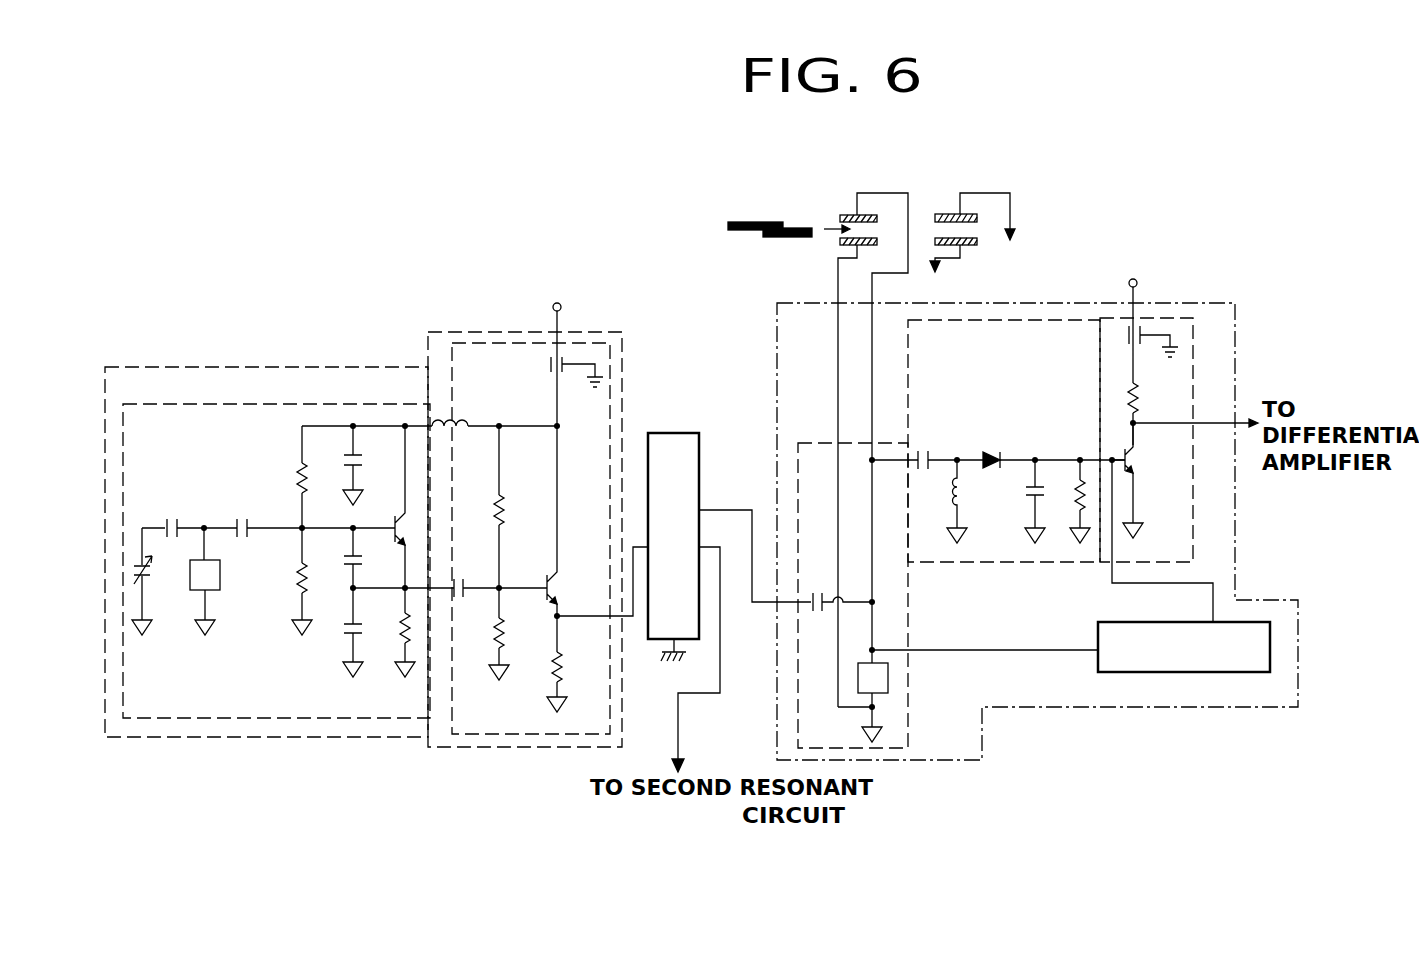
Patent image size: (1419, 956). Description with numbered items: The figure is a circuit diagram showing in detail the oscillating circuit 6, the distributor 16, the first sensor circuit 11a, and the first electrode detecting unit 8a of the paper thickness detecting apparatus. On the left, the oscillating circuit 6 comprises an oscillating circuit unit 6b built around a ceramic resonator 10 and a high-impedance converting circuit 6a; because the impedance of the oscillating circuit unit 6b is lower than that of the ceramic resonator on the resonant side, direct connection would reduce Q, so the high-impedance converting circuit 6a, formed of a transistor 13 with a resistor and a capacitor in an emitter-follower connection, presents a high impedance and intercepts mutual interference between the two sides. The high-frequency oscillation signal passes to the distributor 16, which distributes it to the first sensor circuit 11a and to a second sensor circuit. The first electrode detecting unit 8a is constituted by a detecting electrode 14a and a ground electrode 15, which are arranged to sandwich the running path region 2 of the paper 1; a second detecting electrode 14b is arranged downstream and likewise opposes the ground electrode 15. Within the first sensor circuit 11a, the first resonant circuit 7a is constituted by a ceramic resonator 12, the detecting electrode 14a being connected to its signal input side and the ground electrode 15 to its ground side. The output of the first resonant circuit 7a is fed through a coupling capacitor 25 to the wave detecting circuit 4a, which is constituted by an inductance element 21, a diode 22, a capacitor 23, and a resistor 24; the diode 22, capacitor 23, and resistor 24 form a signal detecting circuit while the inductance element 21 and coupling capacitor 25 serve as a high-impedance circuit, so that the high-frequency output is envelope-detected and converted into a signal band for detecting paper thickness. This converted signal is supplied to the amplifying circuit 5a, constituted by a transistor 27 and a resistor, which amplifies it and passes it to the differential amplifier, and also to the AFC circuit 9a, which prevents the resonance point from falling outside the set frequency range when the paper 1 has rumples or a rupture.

The paper 1 is at (751, 222).
The running path region 2 is at (877, 221).
The wave detecting circuit 4a is at (977, 320).
The amplifying circuit 5a is at (1175, 318).
The oscillating circuit 6 is at (168, 368).
The high-impedance converting circuit 6a is at (522, 343).
The oscillating circuit unit 6b is at (243, 405).
The first resonant circuit 7a is at (905, 749).
The first electrode detecting unit 8a is at (827, 218).
The AFC circuit 9a is at (1198, 672).
The ceramic resonator 10 is at (221, 576).
The first sensor circuit 11a is at (1044, 711).
The ceramic resonator 12 is at (888, 684).
The transistor 13 is at (560, 585).
The detecting electrode 14a is at (877, 217).
The detecting electrode 14b is at (973, 213).
The ground electrode 15 is at (877, 244).
The distributor 16 is at (676, 433).
The inductance element 21 is at (963, 491).
The diode 22 is at (993, 449).
The capacitor 23 is at (1076, 494).
The resistor 24 is at (1049, 485).
The coupling capacitor 25 is at (925, 448).
The transistor 27 is at (1143, 462).